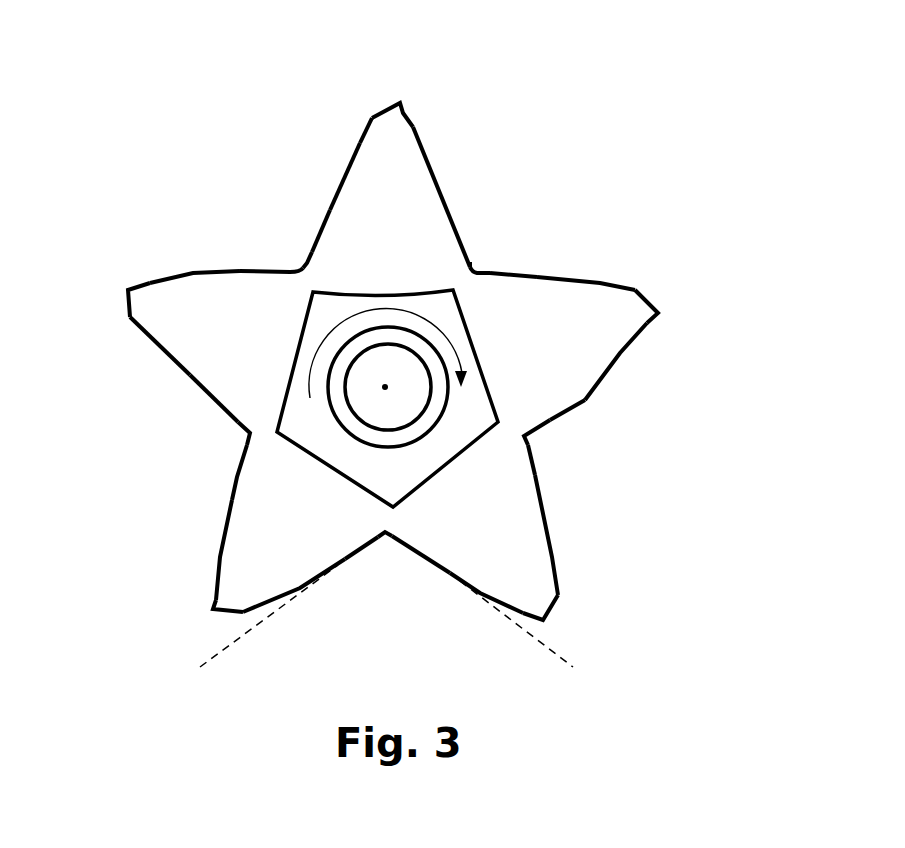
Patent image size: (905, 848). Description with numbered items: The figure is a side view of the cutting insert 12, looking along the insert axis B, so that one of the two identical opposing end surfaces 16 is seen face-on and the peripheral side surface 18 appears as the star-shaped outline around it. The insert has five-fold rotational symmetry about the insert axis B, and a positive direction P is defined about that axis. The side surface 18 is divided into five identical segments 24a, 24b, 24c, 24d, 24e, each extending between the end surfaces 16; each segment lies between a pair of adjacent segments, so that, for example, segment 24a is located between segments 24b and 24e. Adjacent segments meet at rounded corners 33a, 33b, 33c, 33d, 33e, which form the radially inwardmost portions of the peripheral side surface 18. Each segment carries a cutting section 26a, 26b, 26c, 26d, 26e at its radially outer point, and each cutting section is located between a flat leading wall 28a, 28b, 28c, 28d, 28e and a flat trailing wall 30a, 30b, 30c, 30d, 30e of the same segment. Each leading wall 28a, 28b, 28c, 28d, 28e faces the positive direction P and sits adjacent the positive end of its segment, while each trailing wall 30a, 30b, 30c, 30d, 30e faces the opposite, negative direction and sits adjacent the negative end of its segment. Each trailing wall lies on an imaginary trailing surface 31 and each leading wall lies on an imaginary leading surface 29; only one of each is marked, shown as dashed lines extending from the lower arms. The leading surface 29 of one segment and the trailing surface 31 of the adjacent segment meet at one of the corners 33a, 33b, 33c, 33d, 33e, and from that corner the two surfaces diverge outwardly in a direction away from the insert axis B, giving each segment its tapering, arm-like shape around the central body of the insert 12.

The cutting insert 12 is at (168, 77).
The end surface 16 is at (598, 307).
The peripheral side surface 18 is at (348, 143).
The segment 24a is at (195, 258).
The segment 24b is at (446, 156).
The segment 24c is at (636, 360).
The segment 24d is at (566, 560).
The segment 24e is at (204, 558).
The cutting section 26a is at (102, 283).
The cutting section 26b is at (414, 91).
The cutting section 26c is at (675, 313).
The cutting section 26d is at (560, 637).
The cutting section 26e is at (206, 616).
The leading wall 28a is at (278, 270).
The leading wall 28b is at (470, 262).
The leading wall 28c is at (567, 403).
The leading wall 28d is at (405, 545).
The leading wall 28e is at (237, 481).
The trailing wall 30a is at (210, 393).
The trailing wall 30b is at (318, 233).
The trailing wall 30c is at (508, 273).
The trailing wall 30d is at (538, 480).
The trailing wall 30e is at (357, 553).
The rounded corner 33a is at (304, 266).
The rounded corner 33b is at (248, 433).
The rounded corner 33c is at (486, 268).
The rounded corner 33d is at (530, 438).
The rounded corner 33e is at (385, 537).
The imaginary leading surface 29 is at (560, 657).
The imaginary trailing surface 31 is at (217, 655).
The insert axis B is at (378, 399).
The positive direction P is at (388, 362).